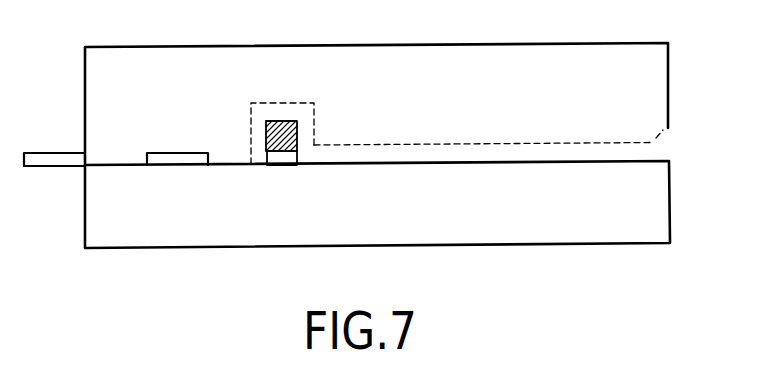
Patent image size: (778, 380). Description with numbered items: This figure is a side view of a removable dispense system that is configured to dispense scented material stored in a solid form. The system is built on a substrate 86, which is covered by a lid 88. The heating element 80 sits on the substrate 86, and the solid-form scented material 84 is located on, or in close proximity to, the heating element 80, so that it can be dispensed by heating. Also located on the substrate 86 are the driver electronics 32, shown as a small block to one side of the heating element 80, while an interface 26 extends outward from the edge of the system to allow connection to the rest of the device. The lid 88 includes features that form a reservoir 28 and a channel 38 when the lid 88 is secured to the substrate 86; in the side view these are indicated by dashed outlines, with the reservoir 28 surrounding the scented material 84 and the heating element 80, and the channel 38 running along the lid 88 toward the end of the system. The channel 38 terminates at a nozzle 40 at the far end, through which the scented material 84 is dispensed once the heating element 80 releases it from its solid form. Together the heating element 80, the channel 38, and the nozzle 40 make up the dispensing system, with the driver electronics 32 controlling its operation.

The interface 26 is at (60, 152).
The reservoir 28 is at (260, 102).
The driver electronics 32 is at (181, 152).
The channel 38 is at (476, 142).
The nozzle 40 is at (657, 133).
The heating element 80 is at (281, 166).
The scented material 84 is at (292, 121).
The substrate 86 is at (670, 212).
The lid 88 is at (668, 52).